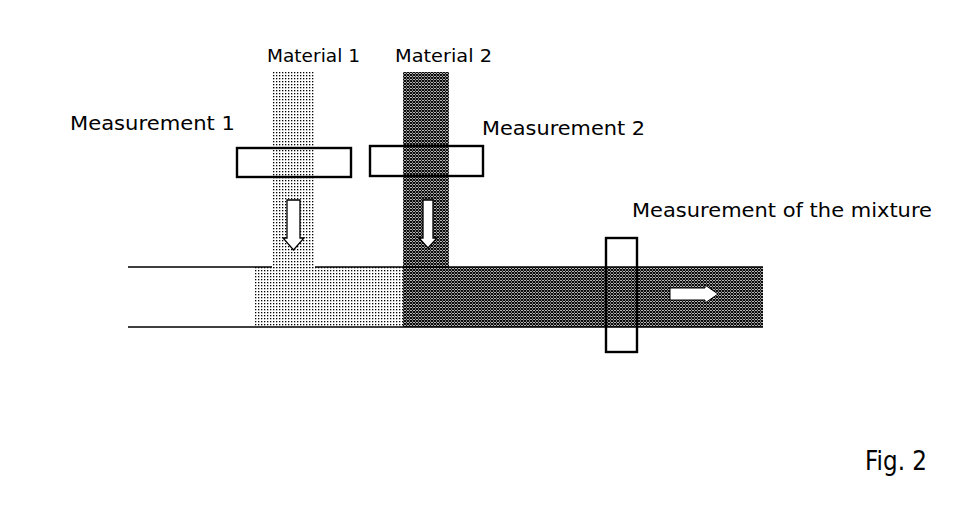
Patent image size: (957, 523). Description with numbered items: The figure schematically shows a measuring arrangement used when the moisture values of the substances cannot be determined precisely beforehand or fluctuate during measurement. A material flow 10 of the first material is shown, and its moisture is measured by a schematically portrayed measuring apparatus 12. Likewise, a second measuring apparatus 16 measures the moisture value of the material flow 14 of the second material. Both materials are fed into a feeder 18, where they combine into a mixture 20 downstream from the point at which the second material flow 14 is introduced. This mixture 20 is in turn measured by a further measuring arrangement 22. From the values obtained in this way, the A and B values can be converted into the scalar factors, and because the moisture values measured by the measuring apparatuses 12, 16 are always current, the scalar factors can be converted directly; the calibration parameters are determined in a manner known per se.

The material flow 10 is at (287, 97).
The measuring apparatus 12 is at (247, 170).
The material flow 14 is at (437, 98).
The measuring apparatus 16 is at (467, 162).
The feeder 18 is at (208, 306).
The mixture 20 is at (543, 310).
The measuring arrangement 22 is at (620, 343).